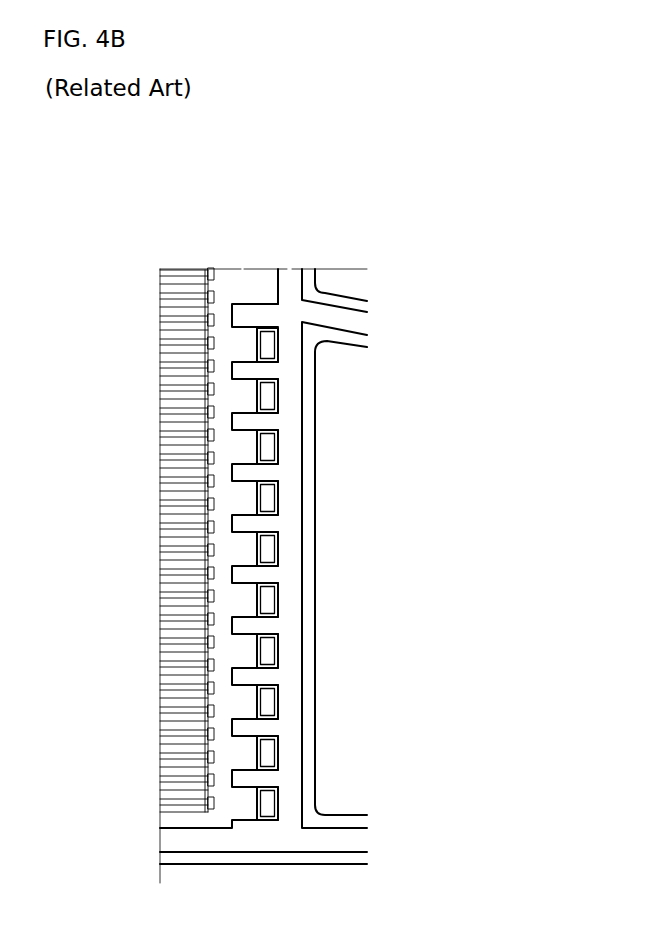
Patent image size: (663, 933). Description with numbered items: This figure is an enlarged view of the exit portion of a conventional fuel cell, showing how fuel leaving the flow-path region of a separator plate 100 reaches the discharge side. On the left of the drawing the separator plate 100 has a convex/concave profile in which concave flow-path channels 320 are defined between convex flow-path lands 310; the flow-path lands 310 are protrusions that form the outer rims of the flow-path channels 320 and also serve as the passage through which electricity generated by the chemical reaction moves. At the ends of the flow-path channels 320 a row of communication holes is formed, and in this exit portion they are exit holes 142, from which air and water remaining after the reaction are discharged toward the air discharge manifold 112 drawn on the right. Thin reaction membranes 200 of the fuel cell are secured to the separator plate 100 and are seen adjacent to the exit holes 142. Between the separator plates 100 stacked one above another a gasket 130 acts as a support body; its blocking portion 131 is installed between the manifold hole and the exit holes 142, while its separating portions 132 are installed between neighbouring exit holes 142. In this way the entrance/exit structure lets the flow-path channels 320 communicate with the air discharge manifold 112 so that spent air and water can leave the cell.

The separator plate 100 is at (351, 518).
The air discharge manifold 112 is at (348, 655).
The gasket 130 is at (351, 548).
The blocking portion 131 is at (290, 572).
The separating portion 132 is at (260, 523).
The exit hole 142 is at (267, 444).
The reaction membrane 200 is at (358, 574).
The flow-path land 310 is at (172, 523).
The flow-path channel 320 is at (180, 471).